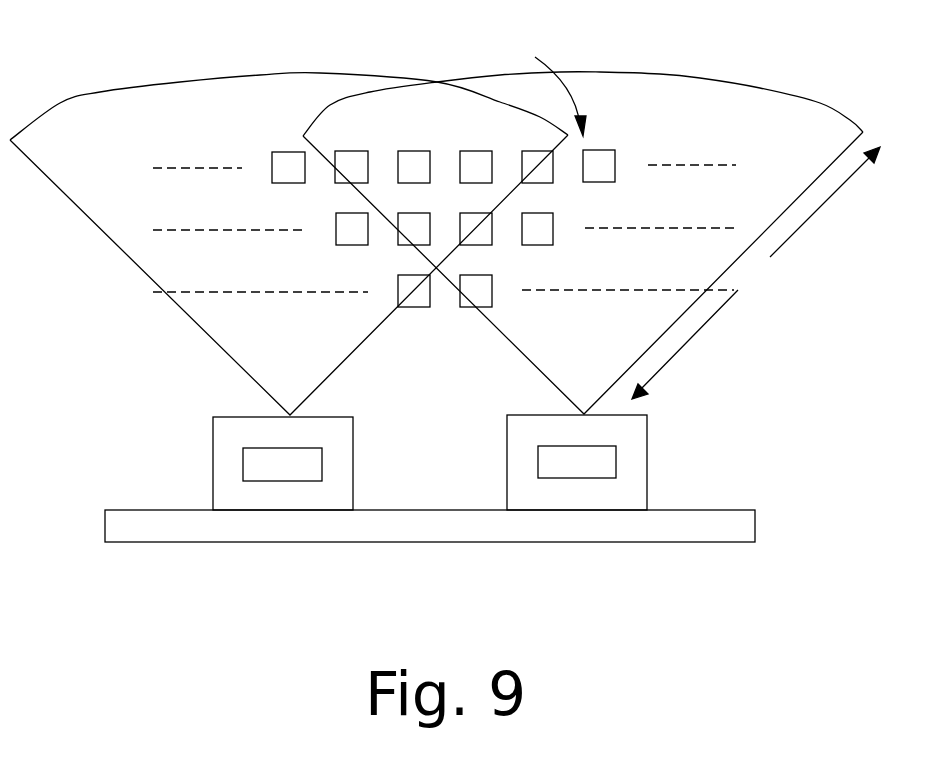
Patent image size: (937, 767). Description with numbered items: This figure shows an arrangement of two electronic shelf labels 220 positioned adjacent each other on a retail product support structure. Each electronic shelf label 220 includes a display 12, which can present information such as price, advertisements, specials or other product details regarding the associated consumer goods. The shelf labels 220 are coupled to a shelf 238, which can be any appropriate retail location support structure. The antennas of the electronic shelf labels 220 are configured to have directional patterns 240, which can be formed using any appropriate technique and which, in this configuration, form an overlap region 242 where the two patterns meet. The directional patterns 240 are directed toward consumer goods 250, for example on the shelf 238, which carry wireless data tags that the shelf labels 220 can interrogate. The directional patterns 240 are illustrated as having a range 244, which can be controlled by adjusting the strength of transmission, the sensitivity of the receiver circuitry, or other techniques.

The directional pattern 240 is at (133, 140).
The overlap region 242 is at (413, 128).
The consumer goods 250 is at (539, 91).
The range 244 is at (756, 273).
The electronic shelf label 220 is at (236, 497).
The display 12 is at (259, 457).
The shelf 238 is at (244, 527).